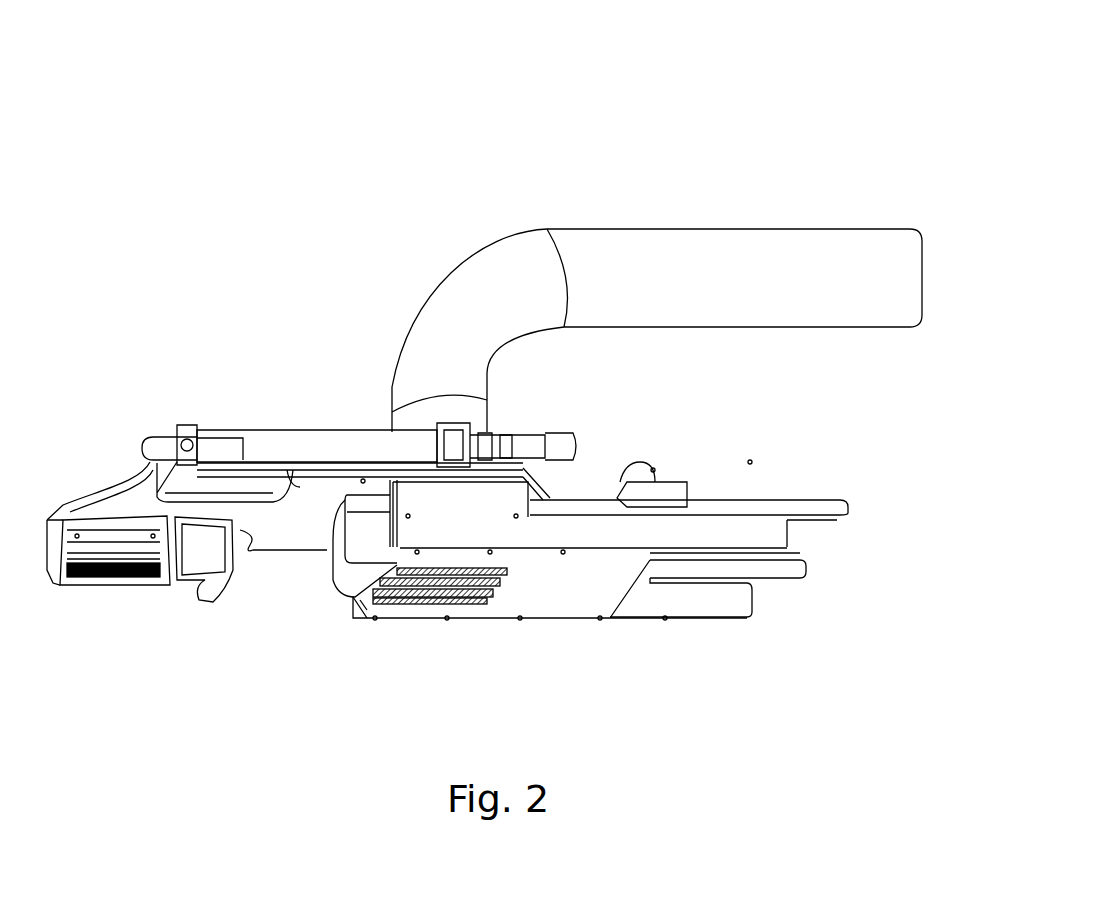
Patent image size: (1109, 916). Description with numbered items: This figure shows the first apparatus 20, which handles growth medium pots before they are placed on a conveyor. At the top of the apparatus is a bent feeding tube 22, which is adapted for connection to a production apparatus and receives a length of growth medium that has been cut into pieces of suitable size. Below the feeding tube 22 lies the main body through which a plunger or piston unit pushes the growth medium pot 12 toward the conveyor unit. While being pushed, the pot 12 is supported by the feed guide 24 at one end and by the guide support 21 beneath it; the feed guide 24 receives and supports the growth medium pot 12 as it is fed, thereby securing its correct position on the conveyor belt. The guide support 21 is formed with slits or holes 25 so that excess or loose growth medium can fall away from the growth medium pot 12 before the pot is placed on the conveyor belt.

The first apparatus 20 is at (961, 51).
The feeding tube 22 is at (622, 265).
The growth medium pot 12 is at (338, 572).
The feed guide 24 is at (186, 575).
The slits or holes 25 is at (432, 600).
The guide support 21 is at (546, 595).